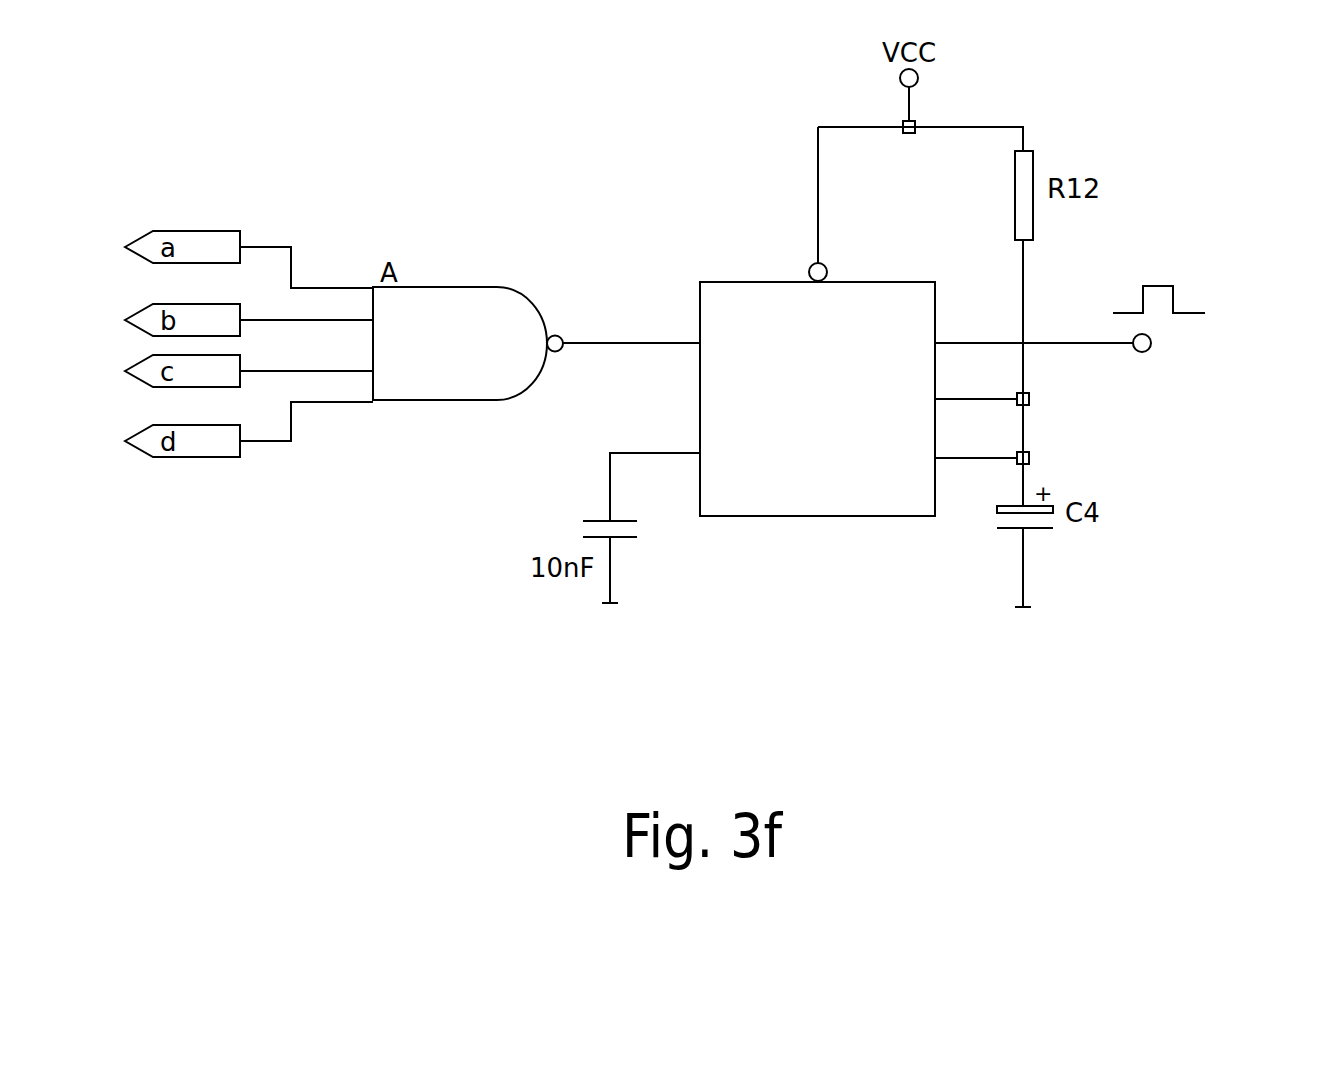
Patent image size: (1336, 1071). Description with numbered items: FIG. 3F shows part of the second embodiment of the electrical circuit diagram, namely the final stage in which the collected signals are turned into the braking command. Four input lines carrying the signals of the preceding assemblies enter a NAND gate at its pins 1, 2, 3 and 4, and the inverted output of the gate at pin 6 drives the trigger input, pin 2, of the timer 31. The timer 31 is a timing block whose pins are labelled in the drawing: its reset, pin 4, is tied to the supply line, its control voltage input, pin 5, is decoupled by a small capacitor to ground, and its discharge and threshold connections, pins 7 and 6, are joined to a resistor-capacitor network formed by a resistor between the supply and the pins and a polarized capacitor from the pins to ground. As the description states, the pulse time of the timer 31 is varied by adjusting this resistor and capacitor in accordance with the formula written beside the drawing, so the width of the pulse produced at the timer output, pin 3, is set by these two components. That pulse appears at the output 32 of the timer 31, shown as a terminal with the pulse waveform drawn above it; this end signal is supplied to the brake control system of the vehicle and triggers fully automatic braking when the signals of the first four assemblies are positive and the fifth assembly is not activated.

The NAND gate input pin 1 is at (306, 267).
The pin 2 (gate input / timer trigger TR) 2 is at (470, 316).
The pin 3 (gate input / timer output Q) 3 is at (686, 341).
The pin 4 (gate input / timer reset R) 4 is at (545, 284).
The timer control voltage pin CV 5 is at (655, 470).
The pin 6 (gate output / timer threshold THR) 6 is at (788, 387).
The timer discharge pin DIS 7 is at (982, 386).
The timer 31 is at (723, 292).
The output 32 is at (1138, 353).